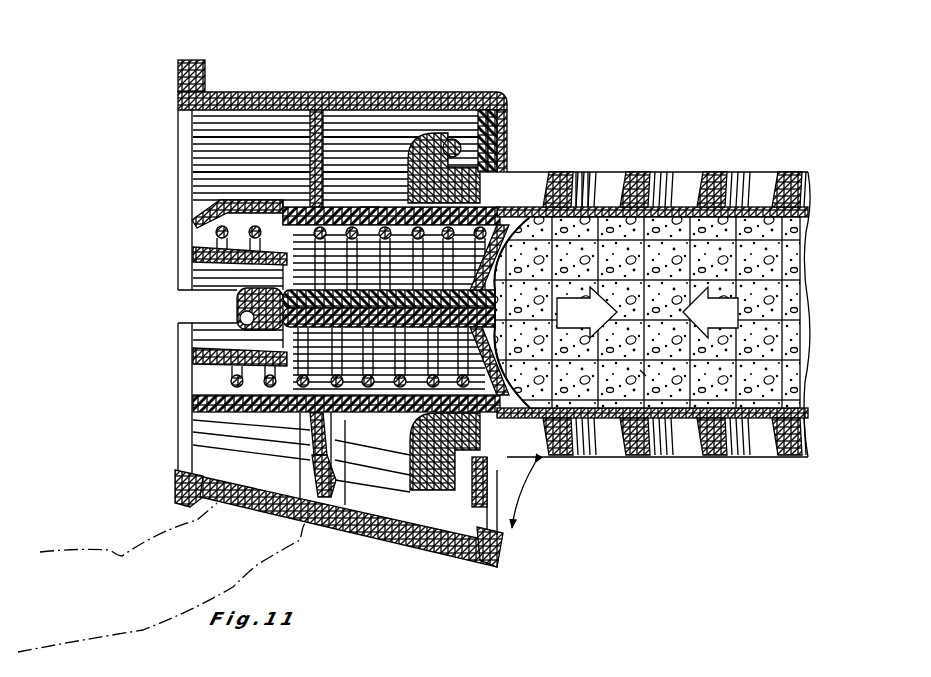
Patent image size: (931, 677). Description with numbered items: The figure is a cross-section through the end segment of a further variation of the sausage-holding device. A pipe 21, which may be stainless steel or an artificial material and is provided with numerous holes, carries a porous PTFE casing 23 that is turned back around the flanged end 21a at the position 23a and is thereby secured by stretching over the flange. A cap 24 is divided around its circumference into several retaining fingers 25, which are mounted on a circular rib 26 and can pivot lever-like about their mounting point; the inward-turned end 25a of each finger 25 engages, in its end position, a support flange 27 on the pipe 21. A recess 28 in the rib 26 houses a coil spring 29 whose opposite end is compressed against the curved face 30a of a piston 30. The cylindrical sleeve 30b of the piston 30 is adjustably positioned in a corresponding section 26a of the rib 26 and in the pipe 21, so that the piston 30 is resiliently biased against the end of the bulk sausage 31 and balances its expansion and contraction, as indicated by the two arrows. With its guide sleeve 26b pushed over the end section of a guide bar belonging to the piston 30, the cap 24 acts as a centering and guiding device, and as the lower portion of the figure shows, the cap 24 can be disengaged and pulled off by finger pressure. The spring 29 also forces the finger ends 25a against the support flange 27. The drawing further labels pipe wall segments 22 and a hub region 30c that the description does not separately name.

The pipe 21 is at (755, 162).
The flanged end of the pipe 21a is at (477, 95).
The pipe wall segments 22 is at (663, 177).
The porous PTFE casing 23 is at (750, 413).
The turned-back position of the casing 23a is at (433, 147).
The cap 24 is at (240, 88).
The retaining fingers 25 is at (375, 97).
The end of retaining finger 25a is at (510, 117).
The circular rib 26 is at (313, 138).
The section of the rib 26a is at (283, 203).
The guide sleeve 26b is at (196, 264).
The support flange 27 is at (490, 143).
The recess 28 is at (250, 220).
The coil spring 29 is at (255, 386).
The piston 30 is at (505, 397).
The curved face of the piston 30a is at (582, 172).
The cylindrical sleeve of the piston 30b is at (370, 212).
The seal body inner hub 30c is at (237, 320).
The bulk sausage 31 is at (643, 373).